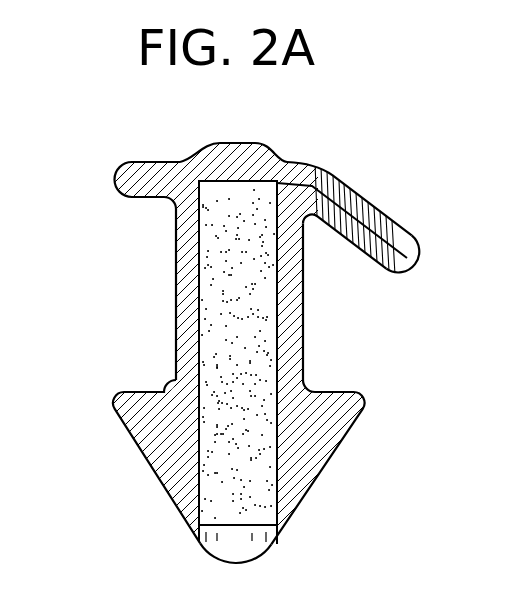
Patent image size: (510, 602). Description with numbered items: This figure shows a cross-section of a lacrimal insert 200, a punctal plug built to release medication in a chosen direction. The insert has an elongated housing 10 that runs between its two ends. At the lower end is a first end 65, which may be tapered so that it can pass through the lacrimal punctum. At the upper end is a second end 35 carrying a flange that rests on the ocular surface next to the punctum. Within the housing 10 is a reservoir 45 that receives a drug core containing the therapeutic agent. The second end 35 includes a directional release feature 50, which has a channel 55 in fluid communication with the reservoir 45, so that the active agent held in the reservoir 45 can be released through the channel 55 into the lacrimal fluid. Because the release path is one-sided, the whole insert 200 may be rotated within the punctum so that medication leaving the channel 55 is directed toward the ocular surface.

The lacrimal insert 200 is at (247, 358).
The elongated housing 10 is at (303, 323).
The second end 35 is at (114, 177).
The directional release feature 50 is at (395, 224).
The channel 55 is at (404, 268).
The first end 65 is at (170, 490).
The reservoir 45 is at (212, 487).